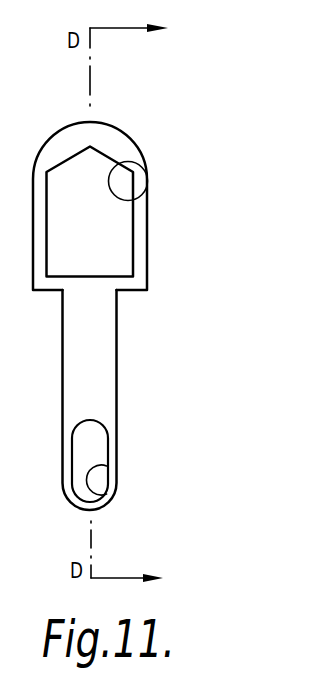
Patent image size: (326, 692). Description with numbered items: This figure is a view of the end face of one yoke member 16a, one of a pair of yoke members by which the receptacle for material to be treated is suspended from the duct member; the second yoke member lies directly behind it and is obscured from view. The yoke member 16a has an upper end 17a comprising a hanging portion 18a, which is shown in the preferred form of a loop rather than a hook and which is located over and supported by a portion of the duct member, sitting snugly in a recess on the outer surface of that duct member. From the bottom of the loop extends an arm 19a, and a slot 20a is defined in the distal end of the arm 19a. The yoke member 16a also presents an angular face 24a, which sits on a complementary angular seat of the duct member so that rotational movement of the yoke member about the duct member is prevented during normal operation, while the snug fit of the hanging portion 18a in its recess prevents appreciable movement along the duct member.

The yoke member 16a is at (155, 347).
The upper end 17a is at (181, 219).
The hanging portion 18a is at (116, 127).
The arm 19a is at (97, 388).
The slot 20a is at (106, 498).
The angular face 24a is at (143, 200).